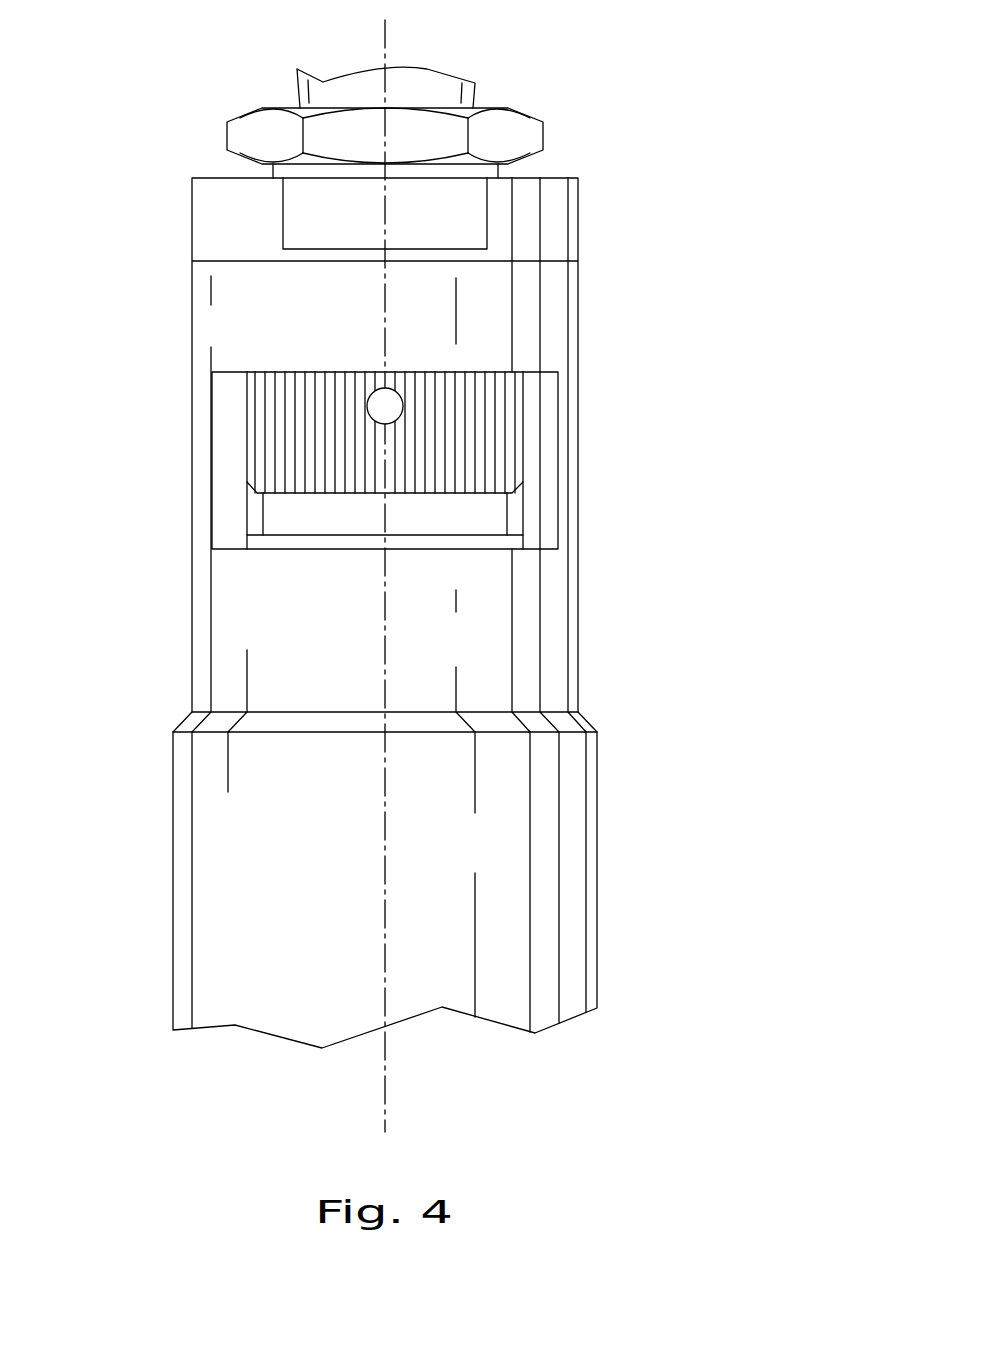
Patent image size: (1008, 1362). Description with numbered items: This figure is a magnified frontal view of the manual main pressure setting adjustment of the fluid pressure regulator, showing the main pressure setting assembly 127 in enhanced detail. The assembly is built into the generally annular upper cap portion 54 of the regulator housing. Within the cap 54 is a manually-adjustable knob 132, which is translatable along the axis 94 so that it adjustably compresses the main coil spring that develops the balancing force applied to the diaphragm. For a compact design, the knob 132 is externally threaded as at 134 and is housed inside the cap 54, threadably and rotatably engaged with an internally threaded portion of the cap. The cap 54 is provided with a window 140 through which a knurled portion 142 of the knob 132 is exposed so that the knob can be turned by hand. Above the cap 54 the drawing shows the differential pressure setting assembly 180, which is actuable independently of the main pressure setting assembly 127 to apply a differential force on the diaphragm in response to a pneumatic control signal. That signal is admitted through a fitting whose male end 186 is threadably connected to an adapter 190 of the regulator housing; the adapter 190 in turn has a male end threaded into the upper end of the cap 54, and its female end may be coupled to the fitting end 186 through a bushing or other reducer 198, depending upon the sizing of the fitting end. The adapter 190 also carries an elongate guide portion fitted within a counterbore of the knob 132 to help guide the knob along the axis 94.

The axis 94 is at (385, 28).
The male end 186 is at (475, 95).
The bushing or other reducer 198 is at (227, 133).
The differential pressure setting assembly 180 is at (567, 167).
The adapter 190 is at (578, 234).
The window 140 is at (558, 390).
The knurled portion 142 is at (247, 436).
The manually-adjustable knob 132 is at (523, 477).
The external threads 134 is at (523, 540).
The main pressure setting assembly 127 is at (787, 422).
The upper cap portion 54 is at (597, 848).